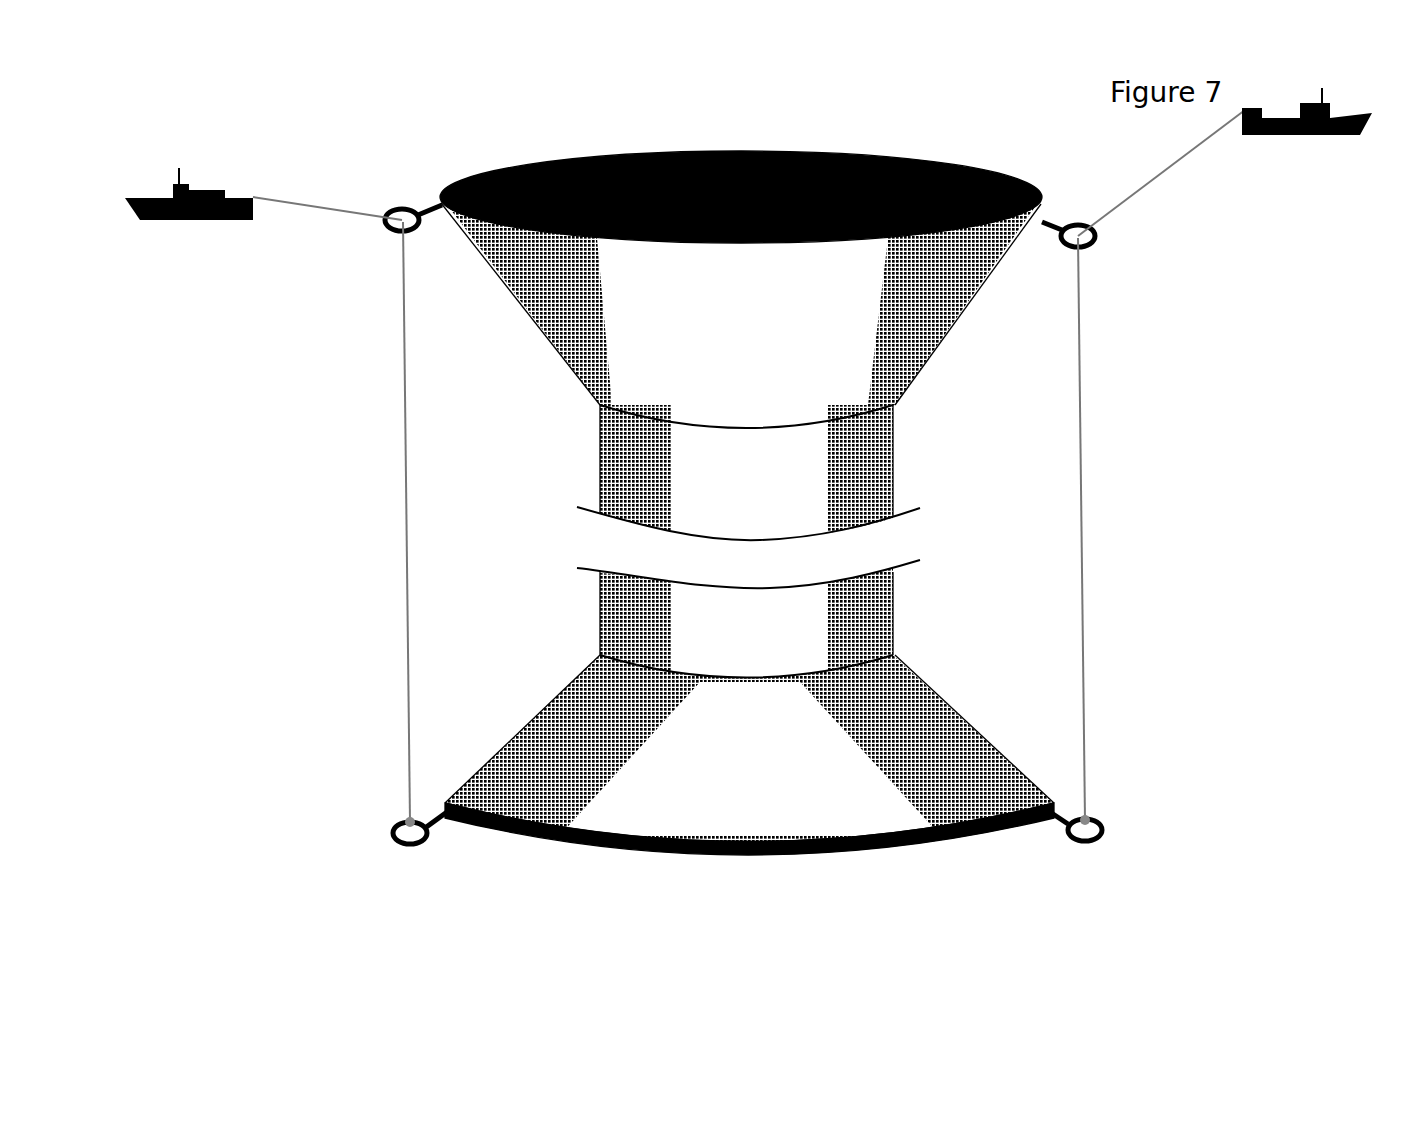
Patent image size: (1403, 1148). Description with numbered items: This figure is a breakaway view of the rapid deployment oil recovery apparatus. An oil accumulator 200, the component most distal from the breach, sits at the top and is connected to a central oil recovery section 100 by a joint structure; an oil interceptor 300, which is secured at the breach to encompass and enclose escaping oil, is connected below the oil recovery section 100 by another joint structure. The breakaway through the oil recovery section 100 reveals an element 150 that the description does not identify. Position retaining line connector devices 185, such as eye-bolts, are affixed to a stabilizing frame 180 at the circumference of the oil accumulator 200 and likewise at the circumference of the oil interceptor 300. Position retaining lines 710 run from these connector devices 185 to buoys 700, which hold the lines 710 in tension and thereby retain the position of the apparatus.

The oil recovery section 100 is at (601, 612).
The cylindrical section 150 is at (893, 410).
The stabilizing frame 180 is at (978, 227).
The position retaining line connector devices 185 is at (400, 210).
The oil accumulator 200 is at (895, 325).
The oil interceptor 300 is at (1010, 700).
The buoy 700 is at (180, 170).
The position retaining line 710 is at (358, 222).